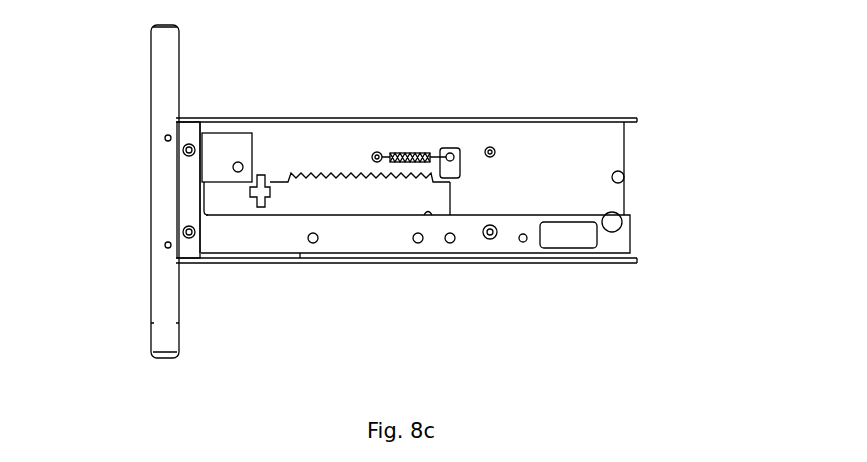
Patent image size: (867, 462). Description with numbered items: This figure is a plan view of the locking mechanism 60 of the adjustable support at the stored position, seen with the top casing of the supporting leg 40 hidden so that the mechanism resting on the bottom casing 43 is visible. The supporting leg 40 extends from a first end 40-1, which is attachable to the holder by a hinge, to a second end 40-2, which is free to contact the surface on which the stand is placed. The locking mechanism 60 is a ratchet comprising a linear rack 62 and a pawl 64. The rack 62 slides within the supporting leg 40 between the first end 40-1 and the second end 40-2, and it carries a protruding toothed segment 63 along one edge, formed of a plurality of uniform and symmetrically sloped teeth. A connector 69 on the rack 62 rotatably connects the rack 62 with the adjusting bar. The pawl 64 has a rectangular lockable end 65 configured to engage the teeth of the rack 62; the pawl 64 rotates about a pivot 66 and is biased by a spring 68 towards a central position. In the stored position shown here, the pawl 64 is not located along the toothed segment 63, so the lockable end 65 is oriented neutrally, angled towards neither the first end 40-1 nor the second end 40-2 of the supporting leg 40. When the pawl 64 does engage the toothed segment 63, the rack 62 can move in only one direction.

The supporting leg 40 is at (590, 117).
The first end of the supporting leg 40-1 is at (628, 264).
The second end of the supporting leg 40-2 is at (188, 192).
The bottom casing 43 is at (613, 147).
The locking mechanism 60 is at (355, 276).
The rack 62 is at (298, 200).
The toothed segment 63 is at (338, 175).
The pawl 64 is at (452, 170).
The lockable end 65 is at (458, 190).
The pivot 66 is at (448, 153).
The spring 68 is at (402, 152).
The connector 69 is at (263, 175).